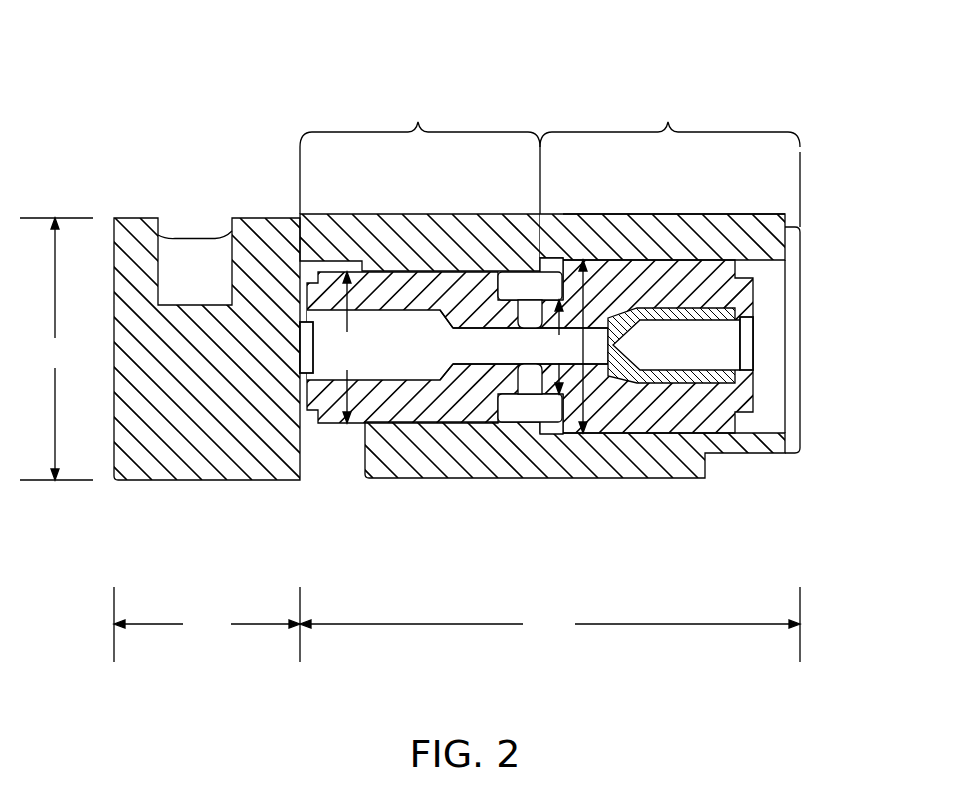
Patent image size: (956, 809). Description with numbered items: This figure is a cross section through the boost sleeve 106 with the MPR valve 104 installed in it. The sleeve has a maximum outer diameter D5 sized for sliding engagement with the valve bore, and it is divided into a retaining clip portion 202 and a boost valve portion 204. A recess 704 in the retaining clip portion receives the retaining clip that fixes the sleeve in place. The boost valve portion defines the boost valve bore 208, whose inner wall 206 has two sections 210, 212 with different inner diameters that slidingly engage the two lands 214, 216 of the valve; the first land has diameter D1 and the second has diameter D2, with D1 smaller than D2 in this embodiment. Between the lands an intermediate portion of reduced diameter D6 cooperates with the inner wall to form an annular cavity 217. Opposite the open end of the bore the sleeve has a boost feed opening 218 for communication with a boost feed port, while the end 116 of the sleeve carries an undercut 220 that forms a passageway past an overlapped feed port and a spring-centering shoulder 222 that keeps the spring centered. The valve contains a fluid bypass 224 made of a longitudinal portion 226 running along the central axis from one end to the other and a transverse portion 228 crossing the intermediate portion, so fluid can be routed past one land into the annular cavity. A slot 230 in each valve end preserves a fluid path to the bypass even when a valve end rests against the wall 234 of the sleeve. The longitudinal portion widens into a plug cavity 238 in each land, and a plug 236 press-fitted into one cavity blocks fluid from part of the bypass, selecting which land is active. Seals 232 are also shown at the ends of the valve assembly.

The end of boost sleeve 116 is at (456, 337).
The recess 704 is at (176, 224).
The first inner wall section 210 is at (420, 283).
The second inner wall section 212 is at (670, 284).
The MPR valve 104 is at (355, 261).
The fluid bypass 224 is at (464, 318).
The annular cavity 217 is at (522, 287).
The boost sleeve 106 is at (712, 214).
The spring-centering shoulder 222 is at (797, 224).
The boost valve bore 208 is at (772, 287).
The seal 232 is at (292, 320).
The transverse portion 228 is at (531, 384).
The inner wall 206 is at (763, 428).
The undercut 220 is at (760, 474).
The boost feed opening 218 is at (345, 463).
The wall 234 is at (302, 460).
The slot 230 is at (303, 383).
The retaining clip portion 202 is at (207, 624).
The boost valve portion 204 is at (550, 624).
The first land 214 is at (396, 302).
The second land 216 is at (666, 302).
The plug cavity 238 is at (384, 359).
The longitudinal portion 226 is at (464, 359).
The plug 236 is at (670, 359).
The first land diameter D1 is at (347, 347).
The second land diameter D2 is at (588, 335).
The sleeve outer diameter D5 is at (56, 349).
The intermediate portion diameter D6 is at (556, 347).